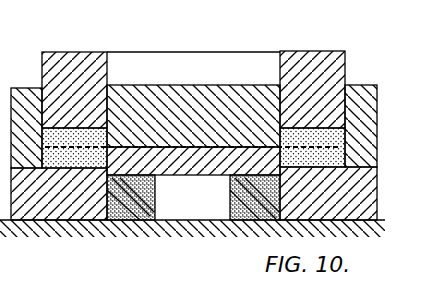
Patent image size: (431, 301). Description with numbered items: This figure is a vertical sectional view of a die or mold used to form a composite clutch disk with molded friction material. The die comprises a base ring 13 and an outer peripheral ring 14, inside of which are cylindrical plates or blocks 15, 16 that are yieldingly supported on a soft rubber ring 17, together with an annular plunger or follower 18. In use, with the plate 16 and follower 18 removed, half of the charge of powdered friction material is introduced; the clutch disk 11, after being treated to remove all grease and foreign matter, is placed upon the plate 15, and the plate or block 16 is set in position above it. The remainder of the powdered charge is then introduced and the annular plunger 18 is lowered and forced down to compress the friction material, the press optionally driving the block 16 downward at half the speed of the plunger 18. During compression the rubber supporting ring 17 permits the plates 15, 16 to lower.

The clutch disk 11 is at (132, 145).
The base ring 13 is at (68, 203).
The outer peripheral ring 14 is at (25, 88).
The cylindrical plate or block 15 is at (202, 170).
The cylindrical plate or block 16 is at (207, 92).
The soft rubber ring 17 is at (135, 178).
The annular plunger or follower 18 is at (69, 64).